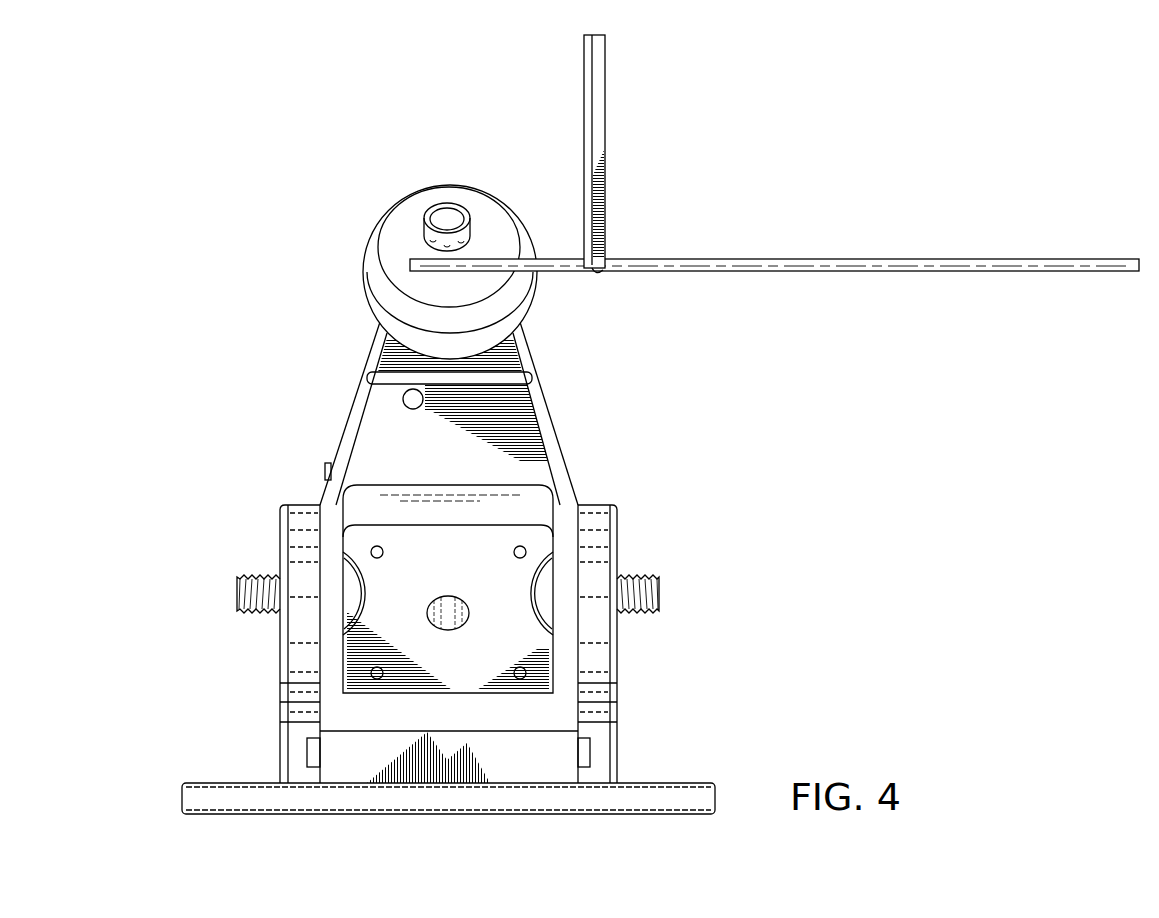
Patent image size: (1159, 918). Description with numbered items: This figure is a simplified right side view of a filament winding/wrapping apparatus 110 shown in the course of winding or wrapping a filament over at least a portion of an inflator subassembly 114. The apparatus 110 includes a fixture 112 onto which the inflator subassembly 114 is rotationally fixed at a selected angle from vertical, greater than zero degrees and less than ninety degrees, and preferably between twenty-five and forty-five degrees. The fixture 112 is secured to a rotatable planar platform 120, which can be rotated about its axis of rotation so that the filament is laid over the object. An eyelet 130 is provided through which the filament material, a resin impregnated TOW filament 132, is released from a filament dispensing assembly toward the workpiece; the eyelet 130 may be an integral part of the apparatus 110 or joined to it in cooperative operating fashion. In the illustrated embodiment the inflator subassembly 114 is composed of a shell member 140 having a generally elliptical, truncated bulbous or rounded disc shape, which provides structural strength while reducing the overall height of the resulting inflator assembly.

The filament winding/wrapping apparatus 110 is at (297, 163).
The fixture 112 is at (425, 374).
The inflator subassembly 114 is at (407, 205).
The rotatable planar platform 120 is at (668, 730).
The eyelet 130 is at (597, 272).
The resin impregnated TOW filament 132 is at (727, 259).
The shell member 140 is at (497, 220).